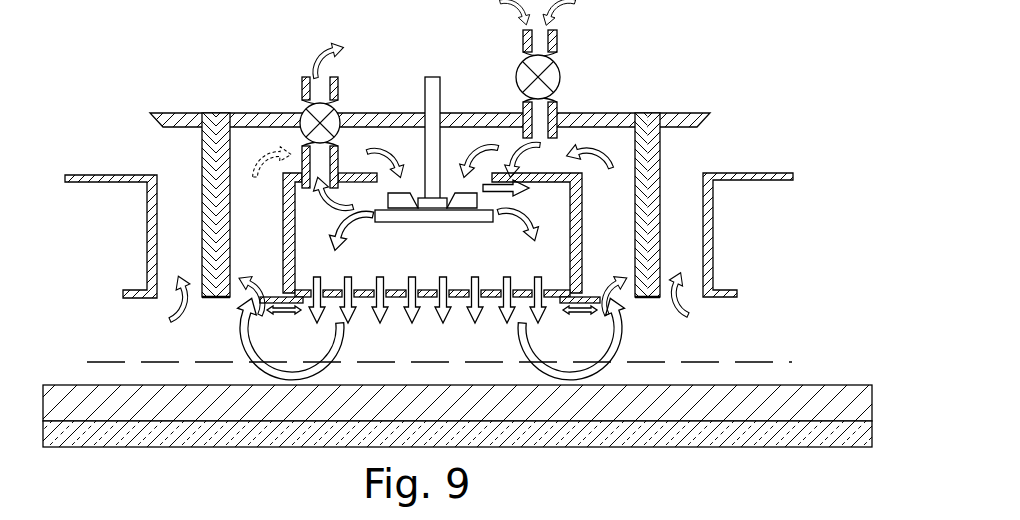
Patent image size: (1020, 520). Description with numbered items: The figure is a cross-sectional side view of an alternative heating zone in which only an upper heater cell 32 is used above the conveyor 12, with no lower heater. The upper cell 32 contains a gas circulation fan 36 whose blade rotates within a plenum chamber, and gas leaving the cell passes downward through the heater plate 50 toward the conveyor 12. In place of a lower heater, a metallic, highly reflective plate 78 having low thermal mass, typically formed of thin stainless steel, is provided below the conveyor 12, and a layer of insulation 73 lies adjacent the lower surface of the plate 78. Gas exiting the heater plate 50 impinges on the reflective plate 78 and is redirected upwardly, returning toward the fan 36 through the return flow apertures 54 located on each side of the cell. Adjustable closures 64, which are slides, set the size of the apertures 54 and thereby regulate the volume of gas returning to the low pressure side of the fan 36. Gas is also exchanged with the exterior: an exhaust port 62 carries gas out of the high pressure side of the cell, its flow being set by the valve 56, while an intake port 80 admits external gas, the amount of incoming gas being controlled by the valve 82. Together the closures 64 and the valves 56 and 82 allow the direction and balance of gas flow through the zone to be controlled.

The conveyor 12 is at (87, 362).
The upper heater cell 32 is at (251, 85).
The fan 36 is at (396, 223).
The heater plate 50 is at (453, 291).
The return flow apertures 54 is at (234, 304).
The exhaust port 56 is at (342, 151).
The valve 62 is at (317, 172).
The closures 64 is at (270, 297).
The layer of insulation 73 is at (186, 445).
The reflective plate 78 is at (459, 415).
The intake port 80 is at (548, 140).
The valve 82 is at (561, 98).